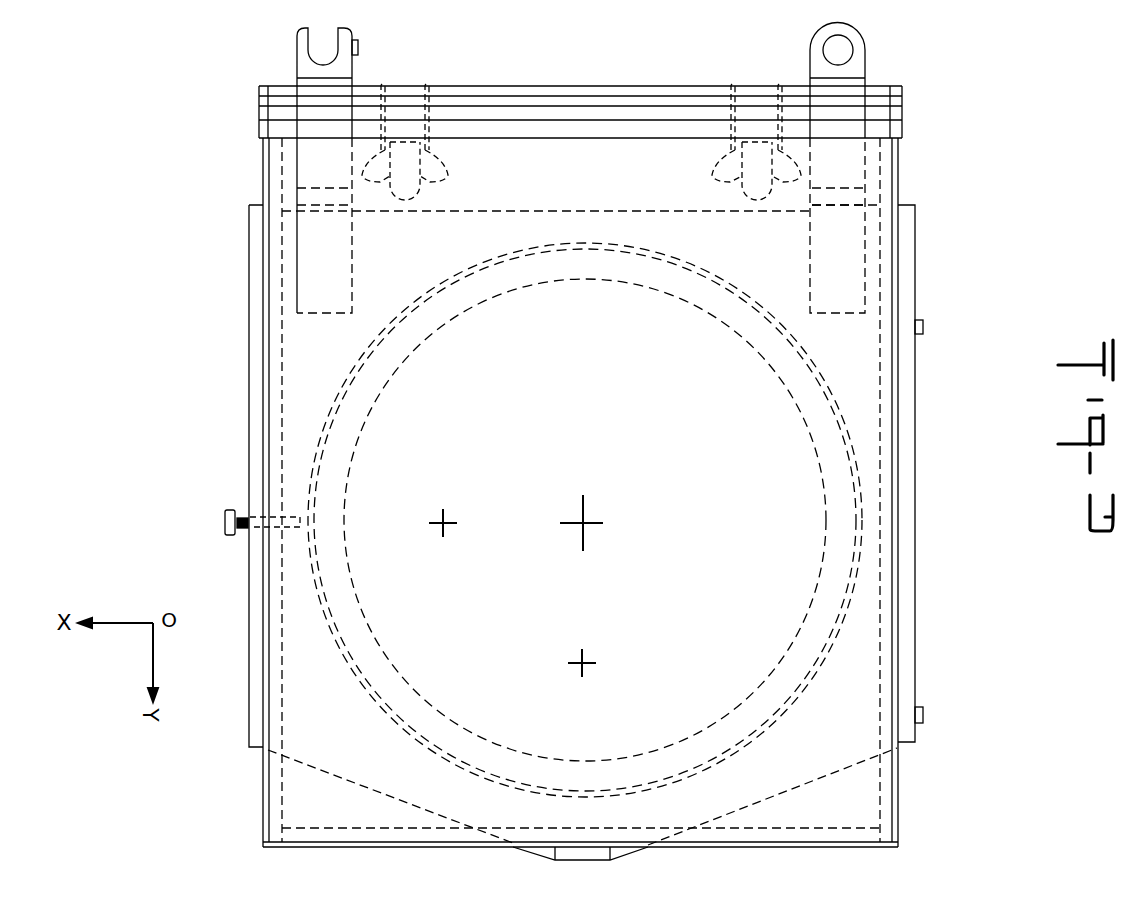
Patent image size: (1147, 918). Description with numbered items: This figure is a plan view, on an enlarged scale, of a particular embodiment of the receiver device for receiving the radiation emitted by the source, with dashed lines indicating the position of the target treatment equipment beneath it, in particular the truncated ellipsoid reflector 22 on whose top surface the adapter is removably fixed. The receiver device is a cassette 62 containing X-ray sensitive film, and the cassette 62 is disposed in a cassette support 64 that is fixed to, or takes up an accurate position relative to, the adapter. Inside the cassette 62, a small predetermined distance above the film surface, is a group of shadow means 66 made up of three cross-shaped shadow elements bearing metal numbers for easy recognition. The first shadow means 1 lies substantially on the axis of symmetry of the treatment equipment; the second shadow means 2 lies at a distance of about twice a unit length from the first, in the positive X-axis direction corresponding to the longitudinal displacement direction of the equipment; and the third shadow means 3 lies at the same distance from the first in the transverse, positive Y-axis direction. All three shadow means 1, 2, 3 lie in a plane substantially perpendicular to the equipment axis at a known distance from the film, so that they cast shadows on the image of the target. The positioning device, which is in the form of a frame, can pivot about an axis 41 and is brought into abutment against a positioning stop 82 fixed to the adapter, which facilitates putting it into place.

The cassette support 64 is at (262, 160).
The positioning stop 82 is at (297, 50).
The axis 41 is at (882, 52).
The truncated ellipsoid reflector 22 is at (790, 752).
The cassette 62 is at (300, 383).
The group of shadow means 66 is at (622, 590).
The first shadow means 1 is at (586, 523).
The second shadow means 2 is at (449, 518).
The third shadow means 3 is at (590, 659).